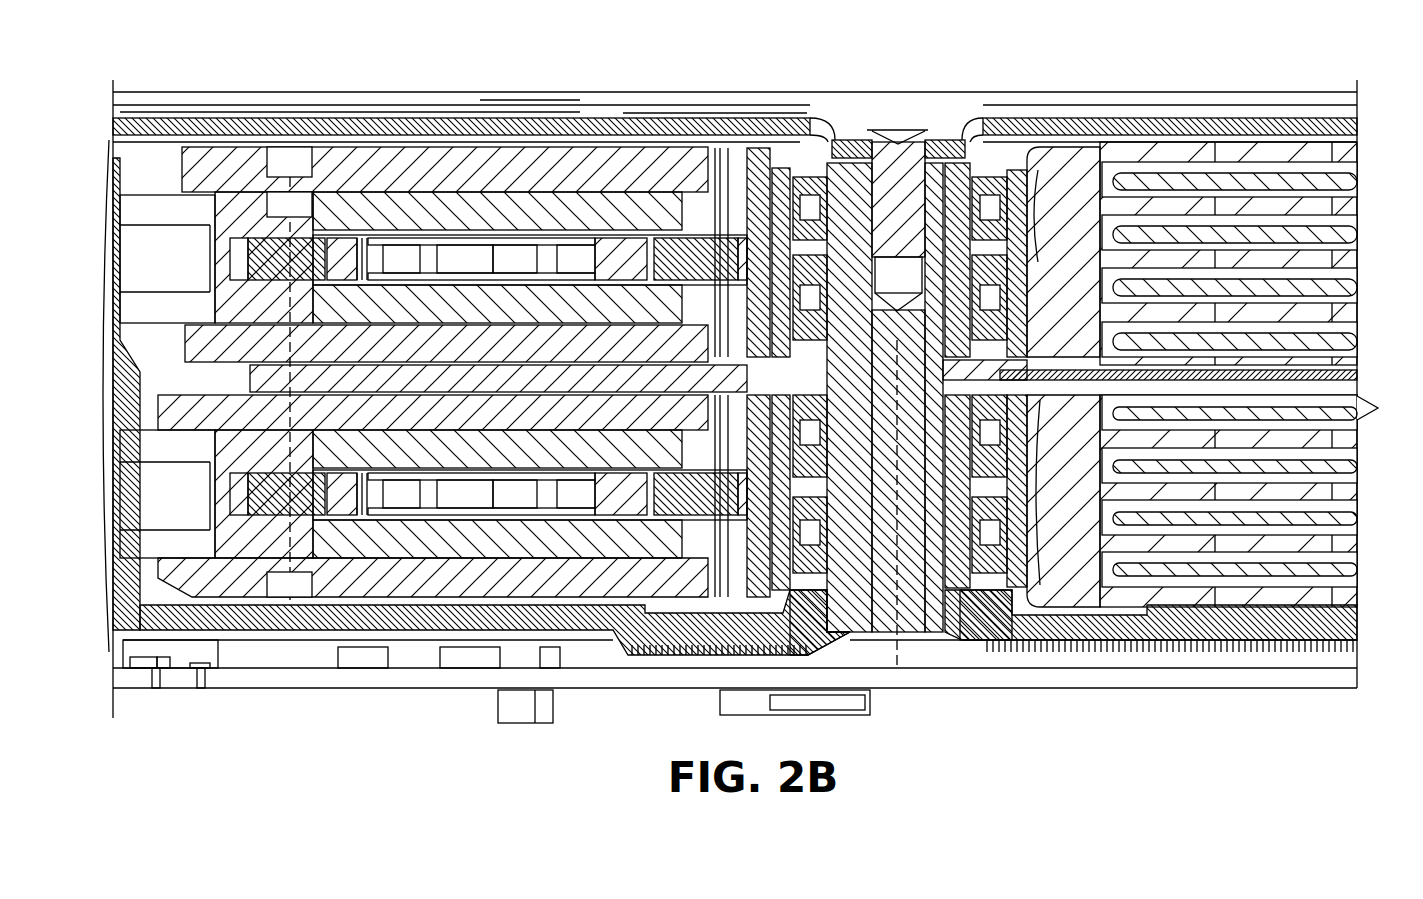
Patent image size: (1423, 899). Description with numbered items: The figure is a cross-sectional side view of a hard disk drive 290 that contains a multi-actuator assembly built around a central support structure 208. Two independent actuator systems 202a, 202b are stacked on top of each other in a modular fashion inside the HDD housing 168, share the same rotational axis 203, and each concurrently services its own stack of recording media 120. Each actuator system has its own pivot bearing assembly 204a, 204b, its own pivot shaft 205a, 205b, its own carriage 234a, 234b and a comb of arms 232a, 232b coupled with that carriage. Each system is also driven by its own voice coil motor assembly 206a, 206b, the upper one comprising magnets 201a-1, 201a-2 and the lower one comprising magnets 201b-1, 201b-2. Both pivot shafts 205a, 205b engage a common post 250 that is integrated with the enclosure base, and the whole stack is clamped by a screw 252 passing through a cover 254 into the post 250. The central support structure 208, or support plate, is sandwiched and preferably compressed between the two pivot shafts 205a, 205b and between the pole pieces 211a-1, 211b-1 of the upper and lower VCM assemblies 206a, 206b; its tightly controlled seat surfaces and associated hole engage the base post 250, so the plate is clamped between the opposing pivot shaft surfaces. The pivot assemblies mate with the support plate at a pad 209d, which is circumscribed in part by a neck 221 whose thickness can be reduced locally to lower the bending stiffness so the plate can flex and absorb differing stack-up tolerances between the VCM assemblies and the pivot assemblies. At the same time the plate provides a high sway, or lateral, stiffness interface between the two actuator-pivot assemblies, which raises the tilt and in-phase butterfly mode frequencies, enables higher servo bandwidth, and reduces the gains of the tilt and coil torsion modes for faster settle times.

The hard disk drive 290 is at (232, 50).
The upper voice coil motor (VCM) assembly 206a is at (370, 160).
The lower voice coil motor (VCM) assembly 206b is at (310, 628).
The cover 254 is at (735, 125).
The upper pivot shaft 205a is at (802, 178).
The lower pivot shaft 205b is at (838, 582).
The screw 252 is at (893, 128).
The upper pivot bearing assembly 204a is at (1047, 262).
The lower pivot bearing assembly 204b is at (1058, 595).
The upper carriage 234a is at (1080, 157).
The lower carriage 234b is at (1060, 598).
The upper set of arms 232a is at (1285, 155).
The lower set of arms 232b is at (1257, 600).
The recording media 120 is at (1345, 234).
The pad 209d is at (1010, 362).
The post 250 is at (879, 344).
The rotational axis 203 is at (900, 633).
The neck 221 is at (770, 390).
The central support structure 208 is at (265, 385).
The magnet 201a-1 is at (300, 312).
The magnet 201a-2 is at (320, 222).
The magnet 201b-1 is at (250, 455).
The magnet 201b-2 is at (250, 550).
The upper actuator system 202a is at (110, 216).
The lower actuator system 202b is at (110, 462).
The pole piece 211a-1 is at (235, 340).
The pole piece 211b-1 is at (235, 408).
The HDD housing 168 is at (140, 600).